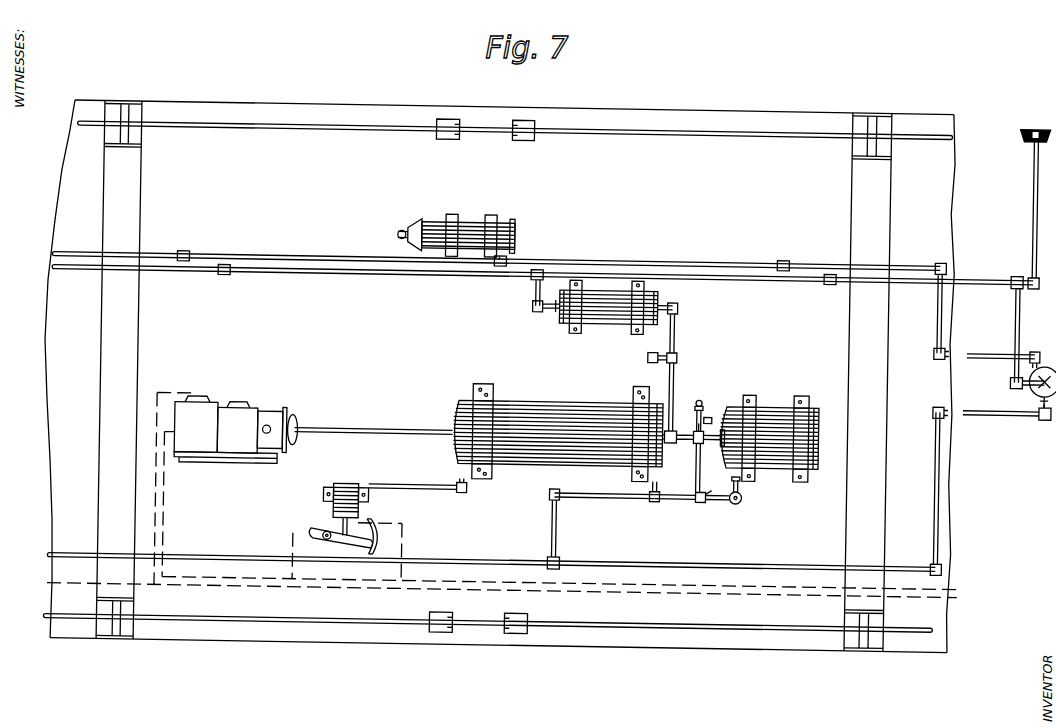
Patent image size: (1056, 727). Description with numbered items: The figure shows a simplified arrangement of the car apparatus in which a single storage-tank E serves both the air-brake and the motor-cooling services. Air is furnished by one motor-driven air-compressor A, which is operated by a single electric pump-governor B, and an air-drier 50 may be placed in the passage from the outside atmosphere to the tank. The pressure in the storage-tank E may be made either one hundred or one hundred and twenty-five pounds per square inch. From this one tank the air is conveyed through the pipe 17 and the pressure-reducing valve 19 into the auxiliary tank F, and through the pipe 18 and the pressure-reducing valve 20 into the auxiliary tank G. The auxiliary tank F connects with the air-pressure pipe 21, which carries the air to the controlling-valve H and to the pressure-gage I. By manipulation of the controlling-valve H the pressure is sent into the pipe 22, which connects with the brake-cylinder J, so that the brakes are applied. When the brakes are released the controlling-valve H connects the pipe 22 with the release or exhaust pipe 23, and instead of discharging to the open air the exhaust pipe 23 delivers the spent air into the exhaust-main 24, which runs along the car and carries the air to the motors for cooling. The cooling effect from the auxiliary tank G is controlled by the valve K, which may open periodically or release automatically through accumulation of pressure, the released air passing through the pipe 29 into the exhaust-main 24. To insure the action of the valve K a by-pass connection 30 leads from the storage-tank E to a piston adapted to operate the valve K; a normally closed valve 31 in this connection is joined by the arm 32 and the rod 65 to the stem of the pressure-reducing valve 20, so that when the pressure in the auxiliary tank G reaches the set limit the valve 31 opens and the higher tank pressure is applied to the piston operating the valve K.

The pipe 17 is at (680, 324).
The pipe 18 is at (682, 400).
The pressure-reducing valve 19 is at (682, 350).
The pressure-reducing valve 20 is at (710, 405).
The air-pressure pipe 21 is at (731, 270).
The pressure pipe 22 is at (720, 252).
The release or exhaust pipe 23 is at (1043, 396).
The exhaust-main 24 is at (474, 553).
The pipe 29 is at (636, 492).
The by-pass connection 30 is at (682, 490).
The valve 31 is at (714, 492).
The arm 32 is at (710, 483).
The air-drier 50 is at (296, 410).
The rod 65 is at (702, 456).
The motor-driven air-compressor A is at (314, 416).
The electric pump-governor B is at (330, 504).
The storage-tank E is at (534, 394).
The auxiliary tank F is at (610, 319).
The auxiliary tank G is at (773, 396).
The controlling-valve H is at (1042, 369).
The pressure-gage I is at (1024, 140).
The brake-cylinder J is at (466, 216).
The valve K is at (748, 490).